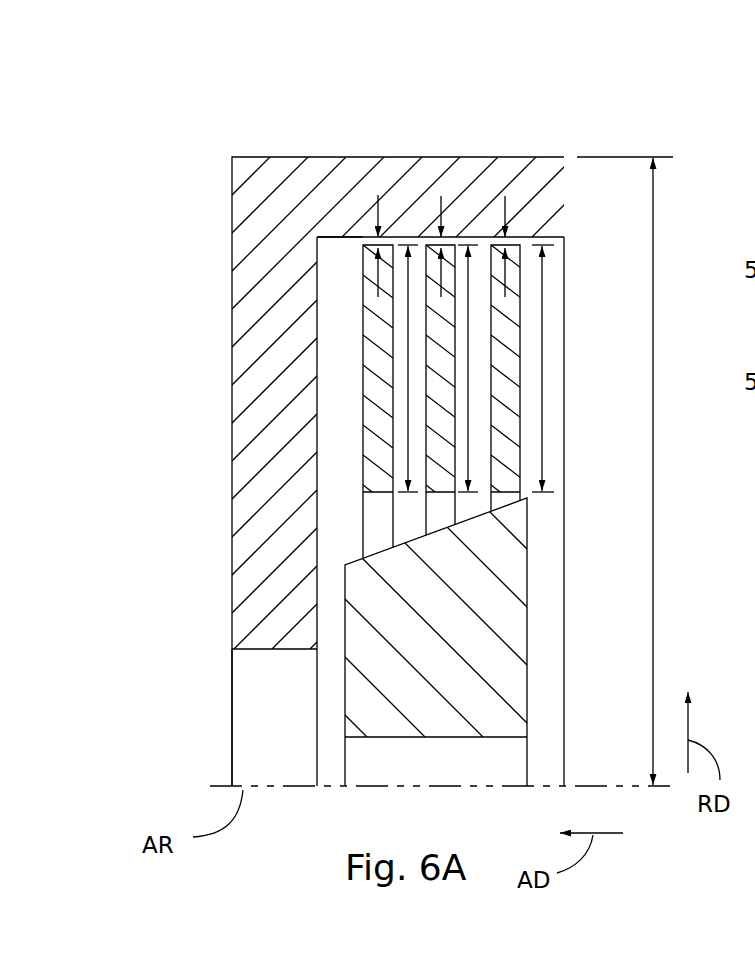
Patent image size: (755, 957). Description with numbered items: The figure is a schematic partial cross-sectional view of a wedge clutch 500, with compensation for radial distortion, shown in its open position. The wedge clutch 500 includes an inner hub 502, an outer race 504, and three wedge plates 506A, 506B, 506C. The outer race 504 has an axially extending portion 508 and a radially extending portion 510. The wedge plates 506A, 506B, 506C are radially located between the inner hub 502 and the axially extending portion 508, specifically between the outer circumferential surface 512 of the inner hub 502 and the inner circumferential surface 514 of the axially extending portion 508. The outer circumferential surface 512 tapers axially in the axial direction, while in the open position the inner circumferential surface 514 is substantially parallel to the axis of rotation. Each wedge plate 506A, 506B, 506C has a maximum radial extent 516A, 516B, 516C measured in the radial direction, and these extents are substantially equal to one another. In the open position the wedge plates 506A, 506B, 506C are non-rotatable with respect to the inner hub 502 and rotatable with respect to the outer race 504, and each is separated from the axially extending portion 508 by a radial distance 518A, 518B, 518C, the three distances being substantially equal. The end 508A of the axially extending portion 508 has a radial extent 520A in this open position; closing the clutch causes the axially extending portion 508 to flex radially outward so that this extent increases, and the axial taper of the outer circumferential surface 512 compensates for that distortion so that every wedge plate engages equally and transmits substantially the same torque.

The wedge clutch 500 is at (192, 171).
The inner hub 502 is at (529, 688).
The outer race 504 is at (288, 156).
The wedge plate 506A is at (367, 330).
The wedge plate 506B is at (430, 378).
The wedge plate 506C is at (520, 340).
The axially extending portion 508 is at (463, 157).
The end 508A is at (567, 192).
The radially extending portion 510 is at (253, 462).
The outer circumferential surface 512 is at (362, 557).
The inner circumferential surface 514 is at (336, 245).
The maximum radial extent 516A is at (407, 317).
The maximum radial extent 516B is at (468, 402).
The maximum radial extent 516C is at (542, 420).
The radial distance 518A is at (378, 195).
The radial distance 518B is at (441, 197).
The radial distance 518C is at (505, 197).
The radial extent 520A is at (653, 572).